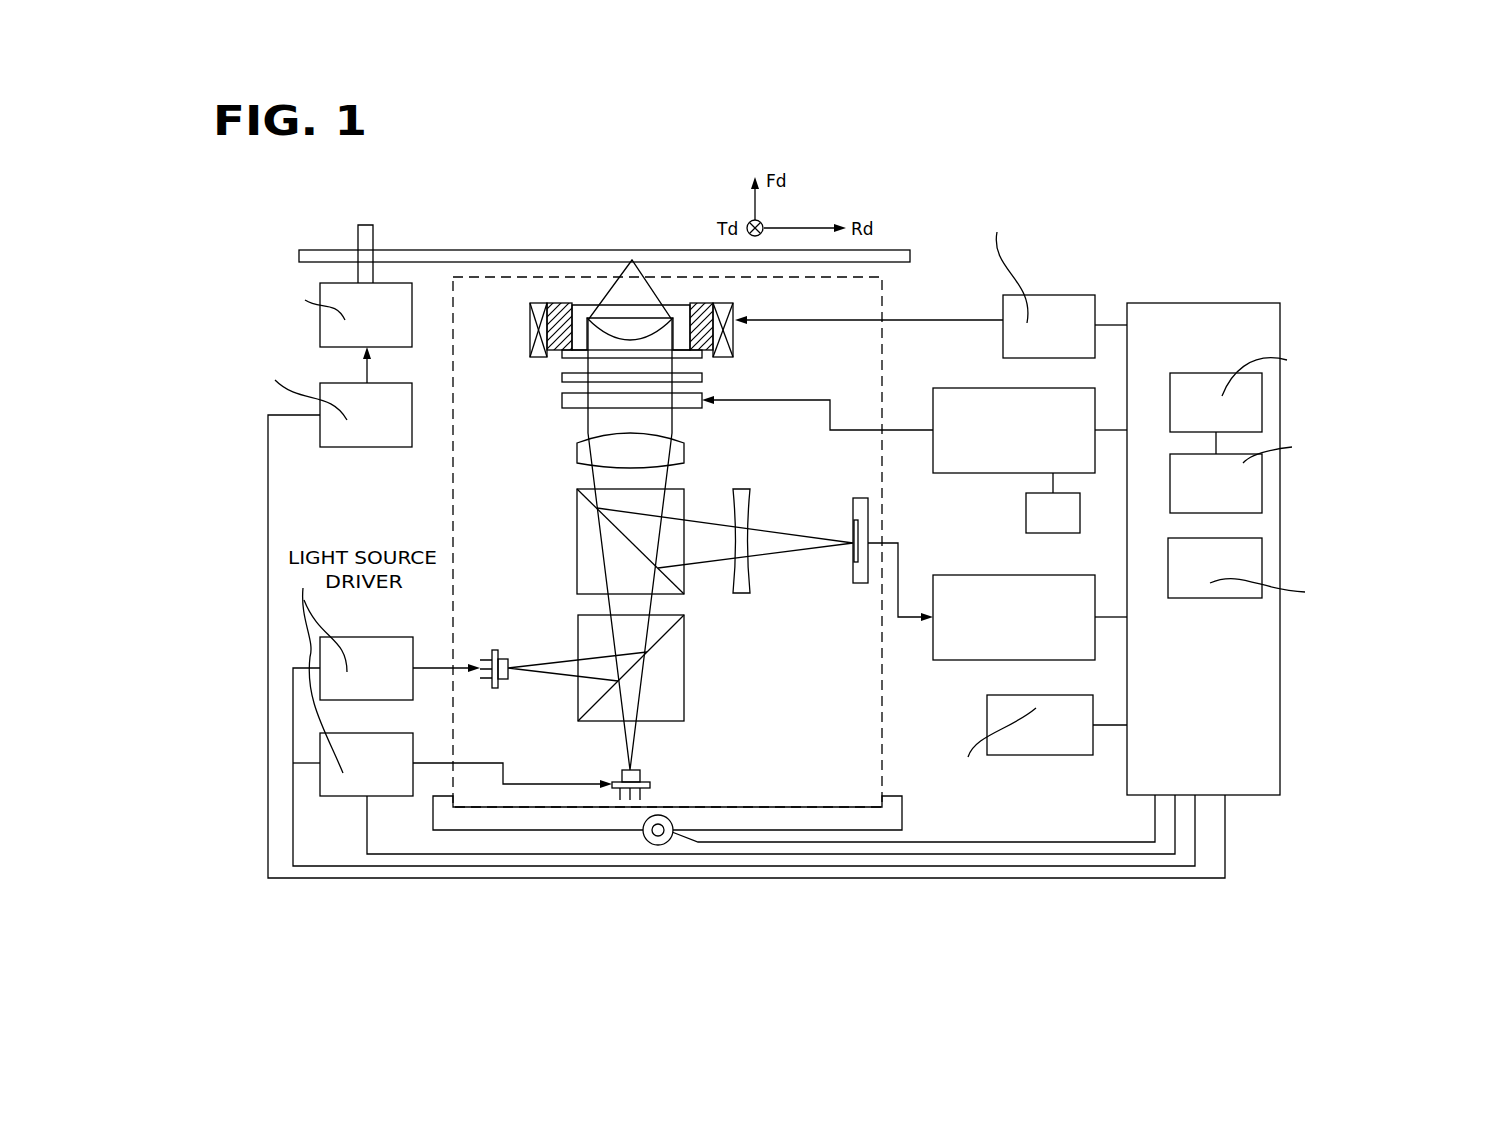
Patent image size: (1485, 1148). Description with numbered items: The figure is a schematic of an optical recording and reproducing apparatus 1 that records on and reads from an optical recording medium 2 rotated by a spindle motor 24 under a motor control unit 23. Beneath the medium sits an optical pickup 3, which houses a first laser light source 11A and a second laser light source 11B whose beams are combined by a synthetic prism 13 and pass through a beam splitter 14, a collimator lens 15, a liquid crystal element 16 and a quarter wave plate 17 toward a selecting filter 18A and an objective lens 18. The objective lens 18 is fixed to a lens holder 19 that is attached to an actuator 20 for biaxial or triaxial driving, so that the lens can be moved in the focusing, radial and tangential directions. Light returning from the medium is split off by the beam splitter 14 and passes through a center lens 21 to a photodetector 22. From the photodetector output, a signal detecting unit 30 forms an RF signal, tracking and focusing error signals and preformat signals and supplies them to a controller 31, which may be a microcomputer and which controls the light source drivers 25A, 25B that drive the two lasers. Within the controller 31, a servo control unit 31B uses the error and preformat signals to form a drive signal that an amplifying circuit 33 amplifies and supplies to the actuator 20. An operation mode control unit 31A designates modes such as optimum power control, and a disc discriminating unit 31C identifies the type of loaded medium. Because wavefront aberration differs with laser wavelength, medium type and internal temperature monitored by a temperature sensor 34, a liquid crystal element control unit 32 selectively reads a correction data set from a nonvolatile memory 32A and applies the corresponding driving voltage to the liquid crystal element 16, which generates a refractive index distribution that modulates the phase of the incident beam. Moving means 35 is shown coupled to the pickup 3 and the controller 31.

The optical recording and reproducing apparatus 1 is at (1113, 256).
The optical recording medium 2 is at (900, 257).
The optical pickup 3 is at (882, 282).
The first laser light source 11A is at (492, 650).
The second laser light source 11B is at (650, 785).
The synthetic prism 13 is at (684, 683).
The beam splitter 14 is at (577, 512).
The collimator lens 15 is at (577, 452).
The liquid crystal element 16 is at (562, 408).
The quarter wave plate 17 is at (562, 378).
The objective lens 18 is at (588, 305).
The selecting filter 18A is at (702, 355).
The lens holder 19 is at (710, 305).
The actuator 20 is at (735, 350).
The center lens 21 is at (745, 594).
The photodetector 22 is at (862, 583).
The motor control unit 23 is at (367, 447).
The spindle motor 24 is at (320, 316).
The light source driver 25A is at (350, 637).
The light source driver 25B is at (350, 733).
The signal detecting unit 30 is at (1015, 575).
The controller 31 is at (1178, 303).
The operation mode control unit 31A is at (1262, 400).
The servo control unit 31B is at (1262, 483).
The disc discriminating unit 31C is at (1262, 566).
The liquid crystal element control unit 32 is at (933, 398).
The nonvolatile memory 32A is at (1026, 505).
The amplifying circuit 33 is at (1050, 295).
The temperature sensor 34 is at (1040, 695).
The moving means 35 is at (900, 796).